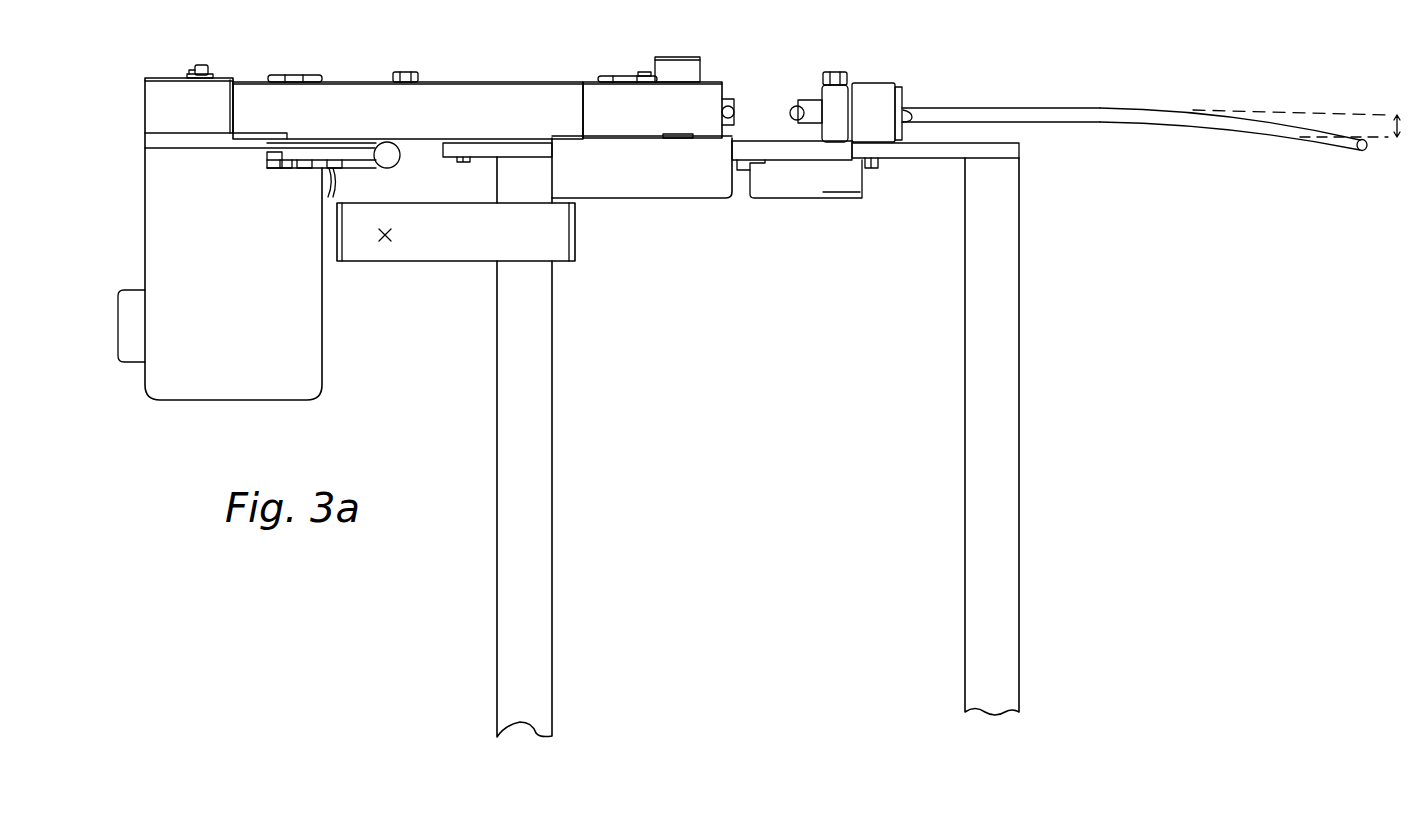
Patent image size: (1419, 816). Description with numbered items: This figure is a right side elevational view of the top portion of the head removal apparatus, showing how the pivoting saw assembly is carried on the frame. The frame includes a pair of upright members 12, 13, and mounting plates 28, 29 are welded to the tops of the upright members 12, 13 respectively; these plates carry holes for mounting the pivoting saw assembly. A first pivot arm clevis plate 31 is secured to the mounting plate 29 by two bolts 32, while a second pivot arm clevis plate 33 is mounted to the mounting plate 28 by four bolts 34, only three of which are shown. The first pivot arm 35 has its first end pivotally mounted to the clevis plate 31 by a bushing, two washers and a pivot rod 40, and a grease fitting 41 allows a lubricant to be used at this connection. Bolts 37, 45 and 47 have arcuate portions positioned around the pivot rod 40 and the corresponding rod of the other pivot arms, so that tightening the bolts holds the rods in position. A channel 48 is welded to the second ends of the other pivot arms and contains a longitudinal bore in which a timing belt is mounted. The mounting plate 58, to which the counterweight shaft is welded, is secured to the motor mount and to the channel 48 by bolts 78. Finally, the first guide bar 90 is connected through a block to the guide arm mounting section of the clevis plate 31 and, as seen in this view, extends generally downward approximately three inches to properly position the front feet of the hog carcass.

The upright member 12 is at (541, 434).
The upright member 13 is at (978, 427).
The mounting plate 28 is at (483, 158).
The mounting plate 29 is at (927, 160).
The first pivot arm clevis plate 31 is at (880, 91).
The bolt 32 is at (875, 168).
The second pivot arm clevis plate 33 is at (503, 80).
The bolt 34 is at (460, 163).
The first pivot arm 35 is at (845, 131).
The bolt 37 is at (842, 74).
The pivot rod 40 is at (905, 99).
The grease fitting 41 is at (908, 117).
The bolt 45 is at (643, 75).
The bolt 47 is at (412, 74).
The channel 48 is at (432, 125).
The mounting plate 58 is at (244, 133).
The bolt 78 is at (285, 170).
The first guide bar 90 is at (1149, 128).